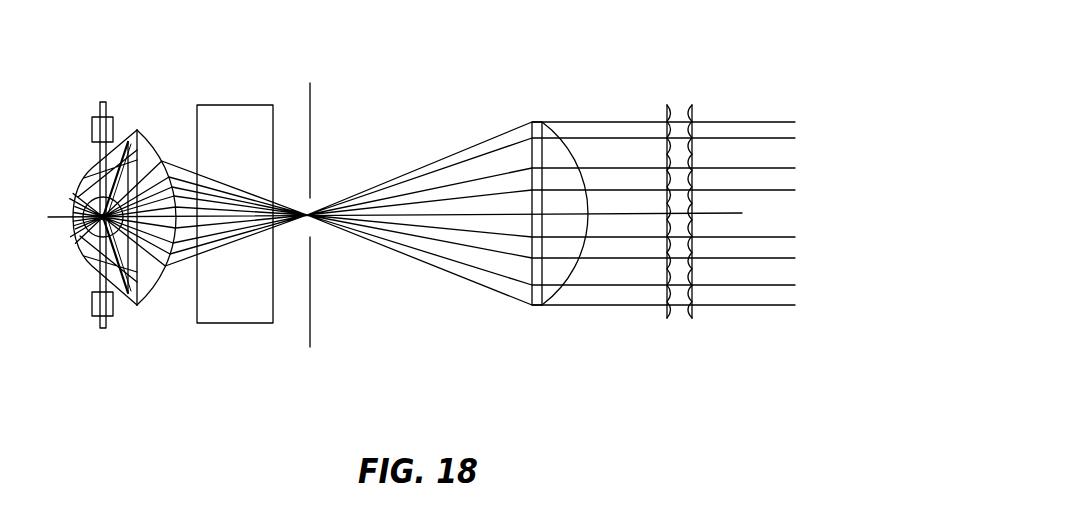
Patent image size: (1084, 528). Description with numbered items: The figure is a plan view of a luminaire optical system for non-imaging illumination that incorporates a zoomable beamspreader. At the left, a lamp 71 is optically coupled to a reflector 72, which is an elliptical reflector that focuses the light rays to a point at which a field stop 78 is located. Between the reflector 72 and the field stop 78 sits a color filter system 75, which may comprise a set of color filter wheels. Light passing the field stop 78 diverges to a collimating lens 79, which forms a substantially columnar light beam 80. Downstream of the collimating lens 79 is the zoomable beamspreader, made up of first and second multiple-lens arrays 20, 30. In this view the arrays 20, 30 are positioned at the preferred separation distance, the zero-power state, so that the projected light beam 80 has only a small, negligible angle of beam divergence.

The lamp 71 is at (80, 195).
The reflector 72 is at (126, 141).
The color filter system 75 is at (203, 105).
The field stop 78 is at (298, 195).
The collimating lens 79 is at (537, 120).
The light beam 80 is at (615, 122).
The first multiple-lens array 20 is at (666, 104).
The second multiple-lens array 30 is at (692, 104).